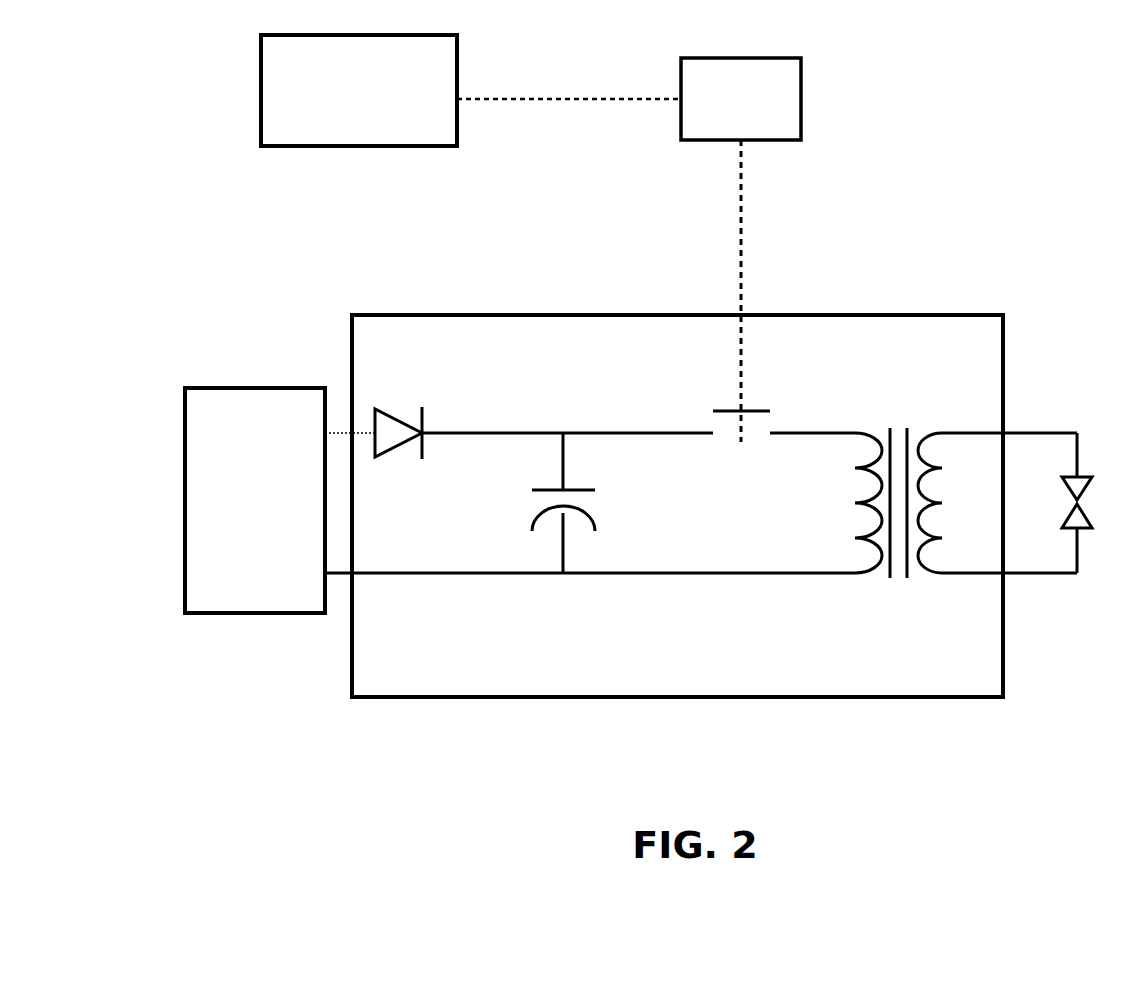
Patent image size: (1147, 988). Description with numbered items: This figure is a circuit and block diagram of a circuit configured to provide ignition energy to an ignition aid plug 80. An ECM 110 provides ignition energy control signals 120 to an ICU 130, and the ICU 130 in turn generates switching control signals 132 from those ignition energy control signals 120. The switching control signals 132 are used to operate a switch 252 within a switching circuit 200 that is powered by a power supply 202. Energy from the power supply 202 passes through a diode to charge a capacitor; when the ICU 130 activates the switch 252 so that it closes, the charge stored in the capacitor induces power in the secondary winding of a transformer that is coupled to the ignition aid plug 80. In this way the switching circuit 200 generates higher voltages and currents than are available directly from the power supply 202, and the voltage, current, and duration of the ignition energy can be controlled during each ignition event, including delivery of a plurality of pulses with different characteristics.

The ECM 110 is at (457, 53).
The ignition energy control signals 120 is at (583, 100).
The ICU 130 is at (801, 100).
The control signal line 132 is at (742, 215).
The switching circuit 200 is at (1003, 353).
The power supply 202 is at (228, 388).
The switch 252 is at (730, 410).
The ignition aid plug 80 is at (1092, 501).